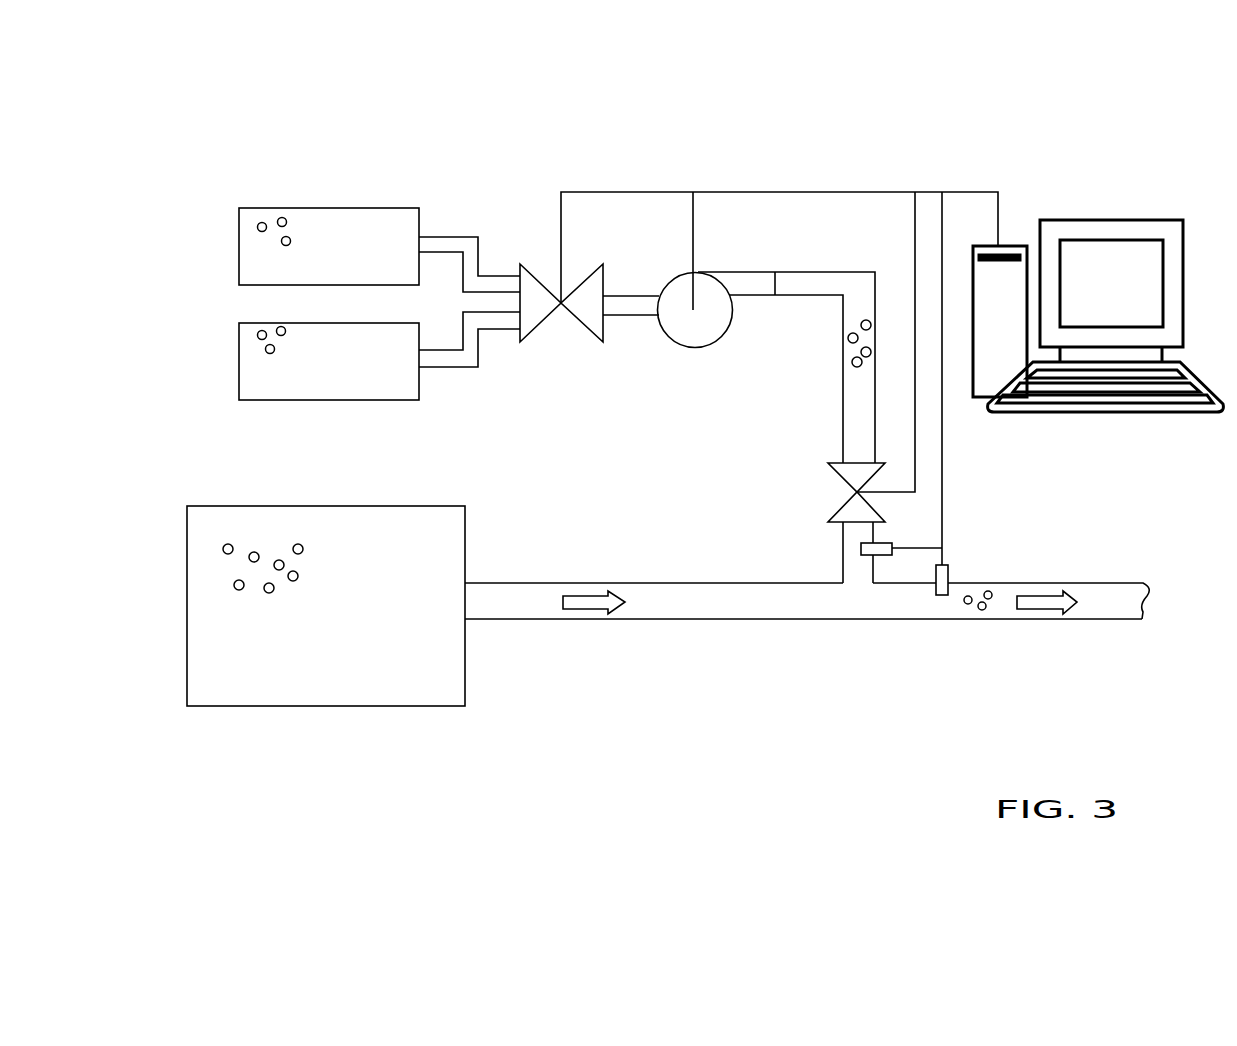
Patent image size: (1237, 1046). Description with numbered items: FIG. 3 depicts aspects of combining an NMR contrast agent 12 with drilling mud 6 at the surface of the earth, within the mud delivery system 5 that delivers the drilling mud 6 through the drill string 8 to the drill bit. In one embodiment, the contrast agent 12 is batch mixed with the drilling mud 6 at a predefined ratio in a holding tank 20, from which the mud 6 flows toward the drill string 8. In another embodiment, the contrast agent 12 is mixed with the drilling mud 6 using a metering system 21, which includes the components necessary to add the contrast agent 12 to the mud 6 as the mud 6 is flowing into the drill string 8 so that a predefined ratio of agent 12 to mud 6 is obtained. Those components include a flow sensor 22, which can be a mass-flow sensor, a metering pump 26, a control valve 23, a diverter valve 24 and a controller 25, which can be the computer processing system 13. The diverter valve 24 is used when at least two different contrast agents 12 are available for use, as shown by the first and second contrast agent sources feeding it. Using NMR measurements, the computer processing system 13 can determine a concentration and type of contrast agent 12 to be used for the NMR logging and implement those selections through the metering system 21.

The drilling mud delivery system 5 is at (388, 148).
The drilling mud 6 is at (592, 610).
The drill string 8 is at (1215, 602).
The contrast agent 12 is at (315, 207).
The computer processing system 13 is at (1098, 278).
The holding tank 20 is at (238, 707).
The metering system 21 is at (232, 180).
The flow sensor 22 is at (890, 547).
The control valve 23 is at (853, 498).
The diverter valve 24 is at (580, 310).
The controller 25 is at (1013, 243).
The metering pump 26 is at (678, 337).